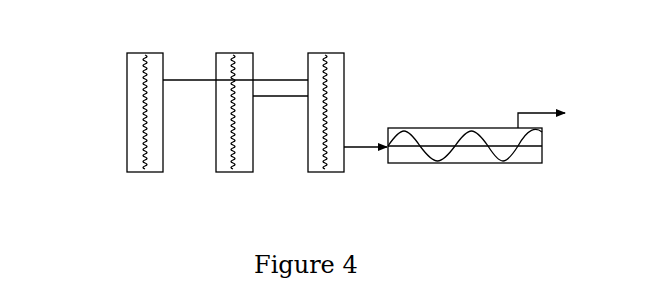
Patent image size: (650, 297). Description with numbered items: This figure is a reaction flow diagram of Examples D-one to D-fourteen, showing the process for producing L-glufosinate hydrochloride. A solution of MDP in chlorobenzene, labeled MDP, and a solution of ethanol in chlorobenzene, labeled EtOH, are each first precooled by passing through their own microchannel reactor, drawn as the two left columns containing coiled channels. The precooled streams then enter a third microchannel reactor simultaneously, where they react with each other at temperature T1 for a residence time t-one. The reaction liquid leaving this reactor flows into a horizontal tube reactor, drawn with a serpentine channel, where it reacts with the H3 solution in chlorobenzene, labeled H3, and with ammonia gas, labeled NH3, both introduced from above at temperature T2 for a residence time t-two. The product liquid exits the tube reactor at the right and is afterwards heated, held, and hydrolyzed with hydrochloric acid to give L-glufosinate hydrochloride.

The MDP solution MDP is at (118, 136).
The ethanol solution EtOH is at (215, 151).
The microchannel reactor reaction temperature T1 is at (326, 125).
The tube reactor reaction temperature T2 is at (476, 158).
The H3 solution H3 is at (398, 127).
The ammonia gas NH3 is at (433, 127).